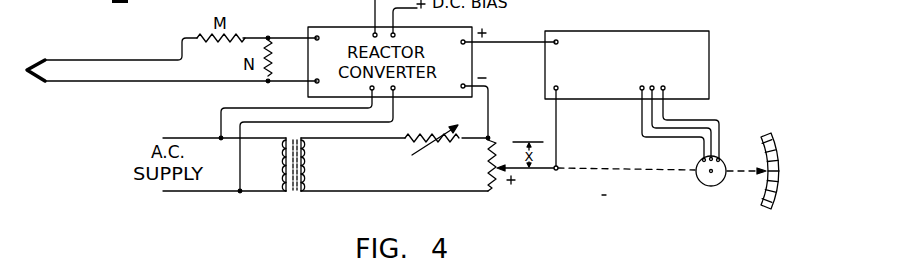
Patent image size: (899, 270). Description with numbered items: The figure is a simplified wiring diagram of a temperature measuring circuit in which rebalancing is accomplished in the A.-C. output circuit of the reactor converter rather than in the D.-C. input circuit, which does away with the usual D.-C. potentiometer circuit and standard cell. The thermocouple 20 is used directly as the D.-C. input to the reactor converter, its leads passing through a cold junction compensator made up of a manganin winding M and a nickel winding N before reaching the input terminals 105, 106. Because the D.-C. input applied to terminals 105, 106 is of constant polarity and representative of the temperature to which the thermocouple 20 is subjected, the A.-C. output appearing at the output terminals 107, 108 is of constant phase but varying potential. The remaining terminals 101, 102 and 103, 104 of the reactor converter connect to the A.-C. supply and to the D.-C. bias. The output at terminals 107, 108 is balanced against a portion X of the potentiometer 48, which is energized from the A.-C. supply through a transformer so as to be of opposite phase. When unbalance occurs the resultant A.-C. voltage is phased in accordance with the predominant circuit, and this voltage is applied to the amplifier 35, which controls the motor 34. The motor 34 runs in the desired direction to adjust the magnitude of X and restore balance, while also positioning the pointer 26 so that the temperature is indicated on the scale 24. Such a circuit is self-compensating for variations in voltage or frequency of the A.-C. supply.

The thermocouple 20 is at (27, 78).
The scale 24 is at (776, 134).
The pointer 26 is at (749, 167).
The motor 34 is at (706, 186).
The amplifier 35 is at (709, 62).
The potentiometer 48 is at (478, 164).
The reactor converter terminal 101 is at (298, 109).
The reactor converter terminal 102 is at (333, 136).
The reactor converter terminal 103 is at (362, 23).
The reactor converter terminal 104 is at (408, 27).
The reactor converter terminal 105 is at (324, 49).
The reactor converter terminal 106 is at (324, 73).
The reactor converter output terminal 107 is at (465, 102).
The reactor converter output terminal 108 is at (499, 51).